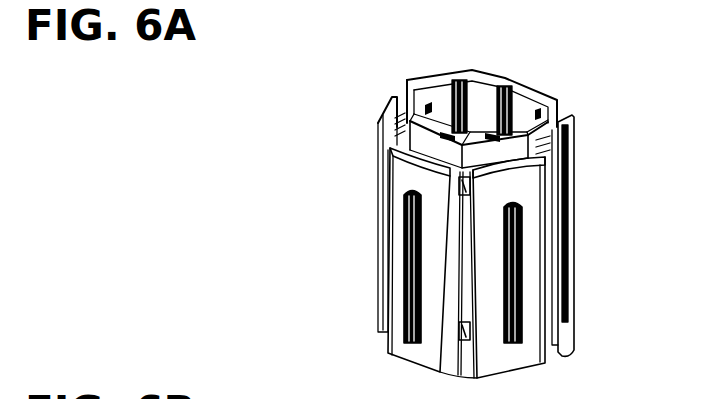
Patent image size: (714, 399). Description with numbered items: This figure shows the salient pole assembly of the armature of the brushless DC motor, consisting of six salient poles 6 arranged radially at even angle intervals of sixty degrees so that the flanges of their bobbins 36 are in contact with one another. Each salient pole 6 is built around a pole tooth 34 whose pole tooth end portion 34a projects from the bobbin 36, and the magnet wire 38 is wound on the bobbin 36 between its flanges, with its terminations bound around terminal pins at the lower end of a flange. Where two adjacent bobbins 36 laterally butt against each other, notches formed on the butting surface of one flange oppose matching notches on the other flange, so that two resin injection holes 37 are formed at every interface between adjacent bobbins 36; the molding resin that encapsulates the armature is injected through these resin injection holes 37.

The salient pole 6 is at (370, 106).
The pole tooth 34 is at (456, 76).
The pole tooth end portion 34a is at (637, 260).
The bobbin 36 is at (522, 368).
The resin injection hole 37 is at (458, 186).
The magnet wire 38 is at (556, 120).